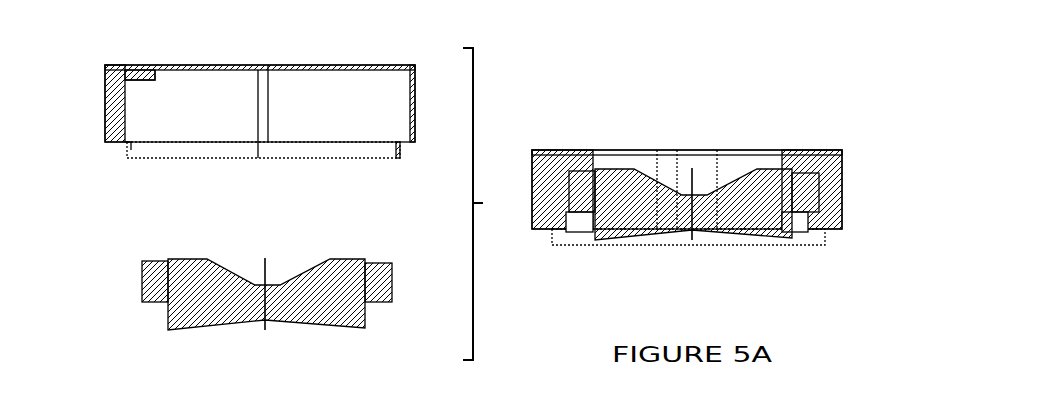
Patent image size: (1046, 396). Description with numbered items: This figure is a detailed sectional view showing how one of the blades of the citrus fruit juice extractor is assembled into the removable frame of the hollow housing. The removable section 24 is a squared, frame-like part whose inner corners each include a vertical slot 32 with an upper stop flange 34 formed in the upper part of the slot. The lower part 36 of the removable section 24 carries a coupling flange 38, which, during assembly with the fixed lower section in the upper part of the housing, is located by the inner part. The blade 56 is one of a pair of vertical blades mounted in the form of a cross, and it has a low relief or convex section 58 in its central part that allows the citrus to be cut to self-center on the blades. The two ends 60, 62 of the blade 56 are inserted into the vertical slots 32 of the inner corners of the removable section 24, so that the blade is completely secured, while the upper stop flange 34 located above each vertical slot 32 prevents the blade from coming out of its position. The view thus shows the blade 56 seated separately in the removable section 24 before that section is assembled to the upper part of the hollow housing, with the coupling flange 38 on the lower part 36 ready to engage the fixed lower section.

The removable section 24 is at (92, 113).
The vertical slot 32 is at (566, 233).
The upper stop flange 34 is at (140, 65).
The lower part 36 is at (130, 158).
The coupling flange 38 is at (127, 147).
The blade 56 is at (330, 278).
The convex section 58 is at (281, 276).
The end 60 is at (148, 290).
The end 62 is at (380, 289).